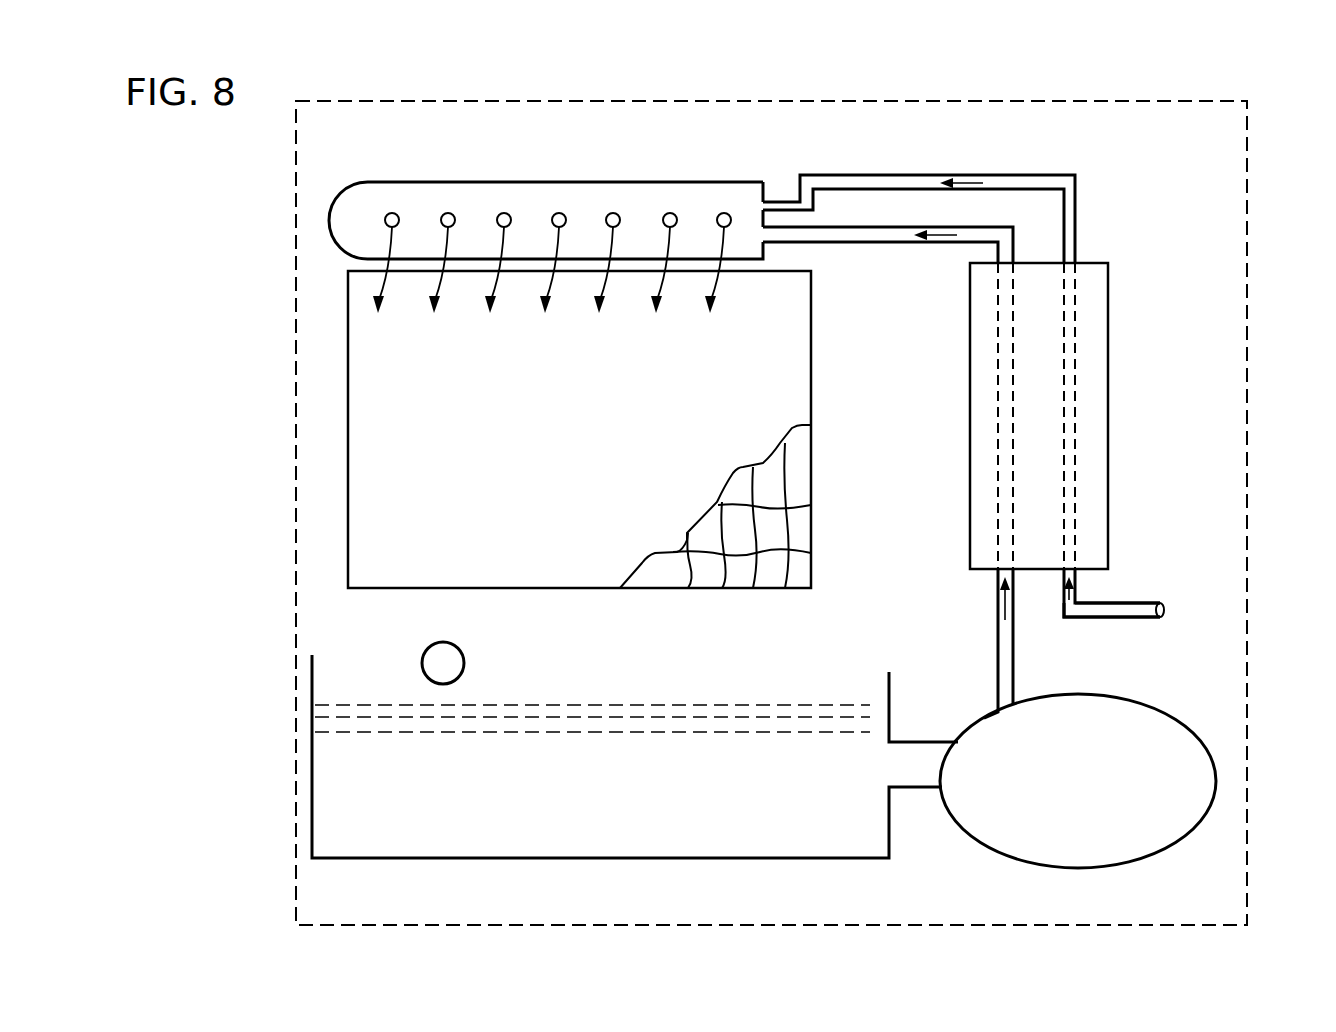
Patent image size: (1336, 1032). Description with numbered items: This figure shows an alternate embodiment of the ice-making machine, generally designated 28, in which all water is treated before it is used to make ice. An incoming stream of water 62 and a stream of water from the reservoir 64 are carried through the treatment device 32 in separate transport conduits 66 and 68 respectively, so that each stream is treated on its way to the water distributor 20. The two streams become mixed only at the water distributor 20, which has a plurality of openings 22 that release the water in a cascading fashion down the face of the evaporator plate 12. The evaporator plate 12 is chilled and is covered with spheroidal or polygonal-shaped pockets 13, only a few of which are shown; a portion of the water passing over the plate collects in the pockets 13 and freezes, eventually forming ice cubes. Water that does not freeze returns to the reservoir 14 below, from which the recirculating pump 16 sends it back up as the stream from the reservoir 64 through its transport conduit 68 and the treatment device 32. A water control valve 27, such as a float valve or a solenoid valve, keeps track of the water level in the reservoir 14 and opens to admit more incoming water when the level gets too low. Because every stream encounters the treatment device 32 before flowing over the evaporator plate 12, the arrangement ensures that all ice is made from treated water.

The evaporator plate 12 is at (363, 400).
The pockets 13 is at (768, 528).
The reservoir 14 is at (312, 762).
The recirculating pump 16 is at (1188, 837).
The water distributor 20 is at (588, 205).
The openings 22 is at (392, 213).
The water control valve 27 is at (463, 657).
The alternate embodiment of the ice-making machine 28 is at (1272, 281).
The treatment device 32 is at (1110, 405).
The incoming stream of water 62 is at (1120, 610).
The stream of water from the reservoir 64 is at (1007, 653).
The transport conduit 66 is at (1077, 185).
The transport conduit 68 is at (937, 245).